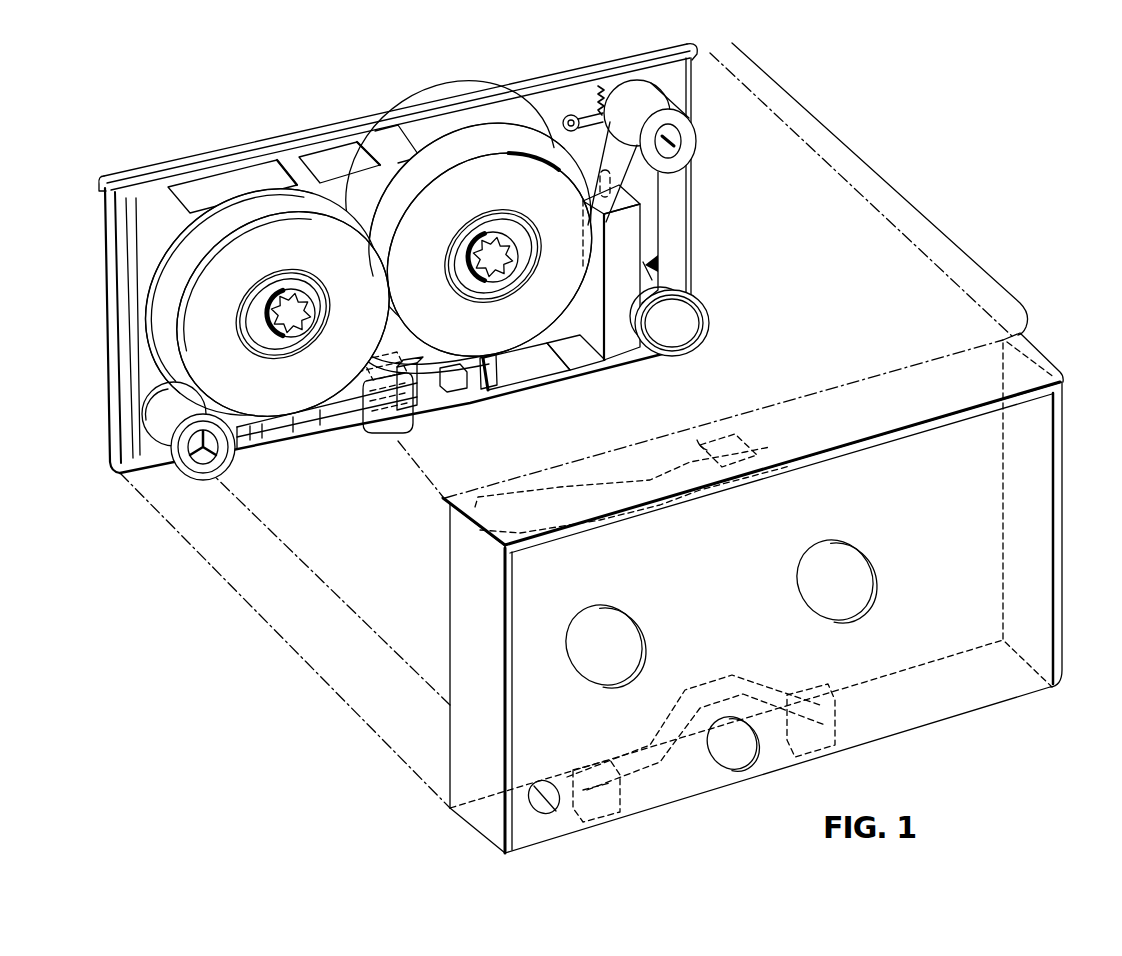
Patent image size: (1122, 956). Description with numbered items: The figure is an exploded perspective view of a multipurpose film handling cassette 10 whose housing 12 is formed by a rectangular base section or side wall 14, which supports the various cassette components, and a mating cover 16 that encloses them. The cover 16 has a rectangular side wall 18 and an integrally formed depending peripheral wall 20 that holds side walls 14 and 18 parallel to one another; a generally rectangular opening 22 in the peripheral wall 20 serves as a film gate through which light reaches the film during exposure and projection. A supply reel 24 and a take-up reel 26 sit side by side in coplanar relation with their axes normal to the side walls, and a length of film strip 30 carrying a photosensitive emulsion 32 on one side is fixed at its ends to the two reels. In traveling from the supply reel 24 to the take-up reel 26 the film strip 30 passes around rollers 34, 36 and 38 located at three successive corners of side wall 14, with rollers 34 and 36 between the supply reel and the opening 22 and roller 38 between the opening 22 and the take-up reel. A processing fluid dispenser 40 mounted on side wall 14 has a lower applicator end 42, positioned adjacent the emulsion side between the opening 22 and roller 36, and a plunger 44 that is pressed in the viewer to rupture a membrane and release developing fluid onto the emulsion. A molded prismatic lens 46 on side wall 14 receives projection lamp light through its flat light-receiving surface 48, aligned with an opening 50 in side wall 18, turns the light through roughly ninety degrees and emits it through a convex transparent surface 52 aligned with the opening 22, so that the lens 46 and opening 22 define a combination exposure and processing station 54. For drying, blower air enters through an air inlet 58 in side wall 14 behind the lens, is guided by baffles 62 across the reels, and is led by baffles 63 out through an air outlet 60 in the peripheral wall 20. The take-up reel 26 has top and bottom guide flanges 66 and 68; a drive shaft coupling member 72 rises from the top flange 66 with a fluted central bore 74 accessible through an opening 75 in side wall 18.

The multipurpose film handling cassette 10 is at (603, 445).
The housing 12 is at (613, 448).
The side wall 14 is at (547, 112).
The cover 16 is at (1068, 383).
The side wall 18 is at (925, 452).
The peripheral wall 20 is at (843, 410).
The opening 22 is at (655, 811).
The supply reel 24 is at (485, 178).
The take-up reel 26 is at (338, 236).
The film strip 30 is at (620, 156).
The photosensitive emulsion 32 is at (672, 235).
The roller 34 is at (692, 122).
The roller 36 is at (685, 318).
The roller 38 is at (203, 463).
The processing fluid dispenser 40 is at (596, 297).
The lower applicator end 42 is at (617, 352).
The plunger 44 is at (590, 193).
The prismatic lens 46 is at (421, 424).
The light-receiving surface 48 is at (410, 436).
The opening 50 is at (733, 745).
The convex transparent surface 52 is at (363, 436).
The combination exposure and processing station 54 is at (399, 442).
The air inlet 58 is at (364, 361).
The air outlet 60 is at (681, 436).
The baffles 62 is at (407, 338).
The baffles 63 is at (335, 163).
The top guide flange 66 is at (190, 312).
The bottom guide flange 68 is at (358, 428).
The drive shaft coupling member 72 is at (268, 296).
The fluted central bore 74 is at (298, 305).
The opening 75 is at (607, 627).